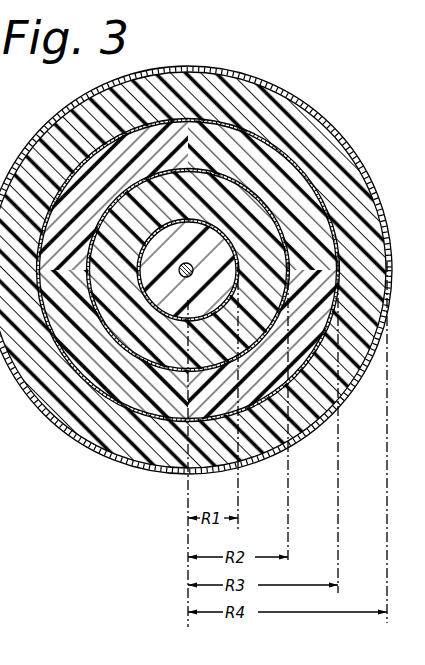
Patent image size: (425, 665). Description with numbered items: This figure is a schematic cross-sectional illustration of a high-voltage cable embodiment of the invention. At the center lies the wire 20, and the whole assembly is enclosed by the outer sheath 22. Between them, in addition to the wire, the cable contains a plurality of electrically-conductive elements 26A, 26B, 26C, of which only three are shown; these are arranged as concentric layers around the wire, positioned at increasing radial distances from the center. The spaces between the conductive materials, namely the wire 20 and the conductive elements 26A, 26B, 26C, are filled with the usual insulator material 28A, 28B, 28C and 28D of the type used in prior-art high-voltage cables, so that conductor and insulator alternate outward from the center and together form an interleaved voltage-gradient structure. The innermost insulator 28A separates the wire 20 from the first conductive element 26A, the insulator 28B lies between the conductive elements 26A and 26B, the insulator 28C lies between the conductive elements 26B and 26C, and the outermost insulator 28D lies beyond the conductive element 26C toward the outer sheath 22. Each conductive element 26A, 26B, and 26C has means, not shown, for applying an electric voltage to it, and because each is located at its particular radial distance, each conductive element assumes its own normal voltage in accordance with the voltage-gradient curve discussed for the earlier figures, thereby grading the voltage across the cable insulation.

The wire 20 is at (192, 266).
The outer sheath 22 is at (295, 105).
The electrically-conductive element 26A is at (203, 221).
The electrically-conductive element 26B is at (170, 170).
The electrically-conductive element 26C is at (112, 147).
The insulator material 28A is at (190, 230).
The insulator material 28B is at (105, 305).
The insulator material 28C is at (114, 334).
The insulator material 28D is at (92, 372).